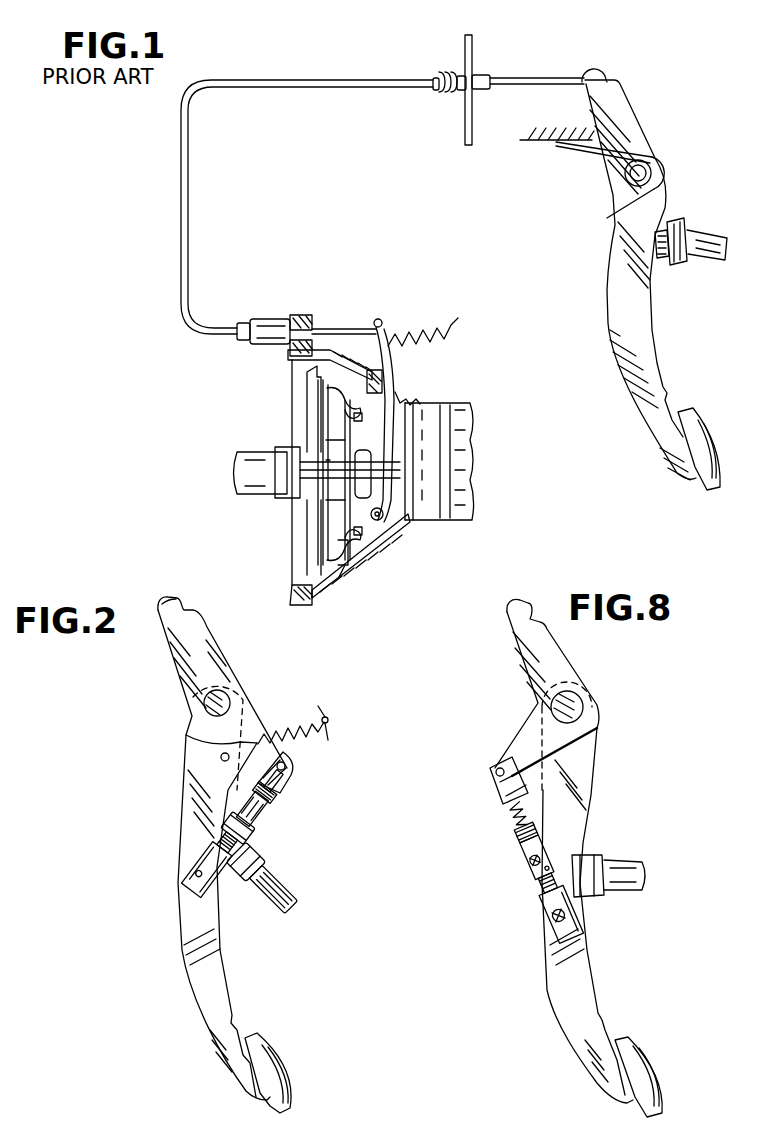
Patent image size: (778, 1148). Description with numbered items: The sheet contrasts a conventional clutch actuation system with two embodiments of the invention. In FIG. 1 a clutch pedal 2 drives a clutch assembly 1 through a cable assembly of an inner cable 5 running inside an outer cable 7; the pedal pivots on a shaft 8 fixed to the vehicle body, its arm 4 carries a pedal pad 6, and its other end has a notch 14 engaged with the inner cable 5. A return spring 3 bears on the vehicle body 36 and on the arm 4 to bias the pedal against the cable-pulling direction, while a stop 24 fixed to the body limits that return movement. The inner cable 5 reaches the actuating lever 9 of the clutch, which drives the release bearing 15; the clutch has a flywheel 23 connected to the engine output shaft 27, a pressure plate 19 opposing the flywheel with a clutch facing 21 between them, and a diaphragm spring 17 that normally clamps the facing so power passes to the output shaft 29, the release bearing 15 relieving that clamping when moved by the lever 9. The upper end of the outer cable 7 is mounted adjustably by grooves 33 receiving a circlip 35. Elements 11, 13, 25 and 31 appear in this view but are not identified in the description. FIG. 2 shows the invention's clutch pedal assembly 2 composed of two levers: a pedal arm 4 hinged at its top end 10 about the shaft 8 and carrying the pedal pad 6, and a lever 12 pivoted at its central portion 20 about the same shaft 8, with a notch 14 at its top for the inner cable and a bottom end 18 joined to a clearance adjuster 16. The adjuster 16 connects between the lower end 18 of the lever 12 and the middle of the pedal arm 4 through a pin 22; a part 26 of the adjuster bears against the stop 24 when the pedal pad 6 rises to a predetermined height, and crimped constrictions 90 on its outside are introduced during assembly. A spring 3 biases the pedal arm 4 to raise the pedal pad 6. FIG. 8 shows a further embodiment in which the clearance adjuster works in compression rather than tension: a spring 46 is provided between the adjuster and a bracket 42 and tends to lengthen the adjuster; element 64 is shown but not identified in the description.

In FIG. 1, the clutch assembly 1 is at (414, 609).
In FIG. 1, the clutch pedal 2 is at (657, 123).
In FIG. 2, the clutch pedal 2 is at (345, 754).
In FIG. 1, the return spring 3 is at (607, 200).
In FIG. 2, the return spring 3 is at (280, 736).
In FIG. 1, the pedal arm 4 is at (618, 321).
In FIG. 2, the pedal arm 4 is at (200, 812).
In FIG. 1, the inner cable 5 is at (536, 78).
In FIG. 1, the pedal pad 6 is at (710, 432).
In FIG. 2, the pedal pad 6 is at (270, 1062).
In FIG. 1, the outer cable 7 is at (272, 82).
In FIG. 1, the shaft 8 is at (645, 168).
In FIG. 2, the shaft 8 is at (190, 712).
In FIG. 1, the actuating lever 9 is at (394, 348).
In FIG. 2, the top end 10 is at (228, 705).
In FIG. 1, the spring 11 is at (437, 312).
In FIG. 2, the lever 12 is at (205, 645).
In FIG. 1, the lever pivot pin 13 is at (384, 520).
In FIG. 1, the notch 14 is at (606, 78).
In FIG. 2, the notch 14 is at (186, 606).
In FIG. 1, the release bearing 15 is at (365, 500).
In FIG. 2, the clearance adjuster 16 is at (278, 855).
In FIG. 1, the diaphragm spring 17 is at (360, 535).
In FIG. 2, the bottom end 18 is at (290, 768).
In FIG. 1, the pressure plate 19 is at (342, 568).
In FIG. 2, the central portion 20 is at (222, 696).
In FIG. 1, the clutch facing 21 is at (328, 530).
In FIG. 2, the pin 22 is at (188, 893).
In FIG. 1, the flywheel 23 is at (312, 395).
In FIG. 1, the stop 24 is at (676, 264).
In FIG. 2, the stop 24 is at (257, 895).
In FIG. 1, the flywheel 25 is at (360, 422).
In FIG. 2, the push member 26 is at (236, 834).
In FIG. 8, the push member 26 is at (565, 880).
In FIG. 1, the engine output shaft 27 is at (262, 460).
In FIG. 1, the output shaft 29 is at (330, 478).
In FIG. 1, the mounting plate 31 is at (472, 52).
In FIG. 1, the grooves 33 is at (438, 78).
In FIG. 1, the circlip 35 is at (466, 78).
In FIG. 1, the vehicle body 36 is at (545, 142).
In FIG. 2, the crimped constrictions 90 is at (262, 815).
In FIG. 8, the bracket 42 is at (494, 790).
In FIG. 8, the spring 46 is at (510, 818).
In FIG. 8, the threaded rod 64 is at (540, 828).